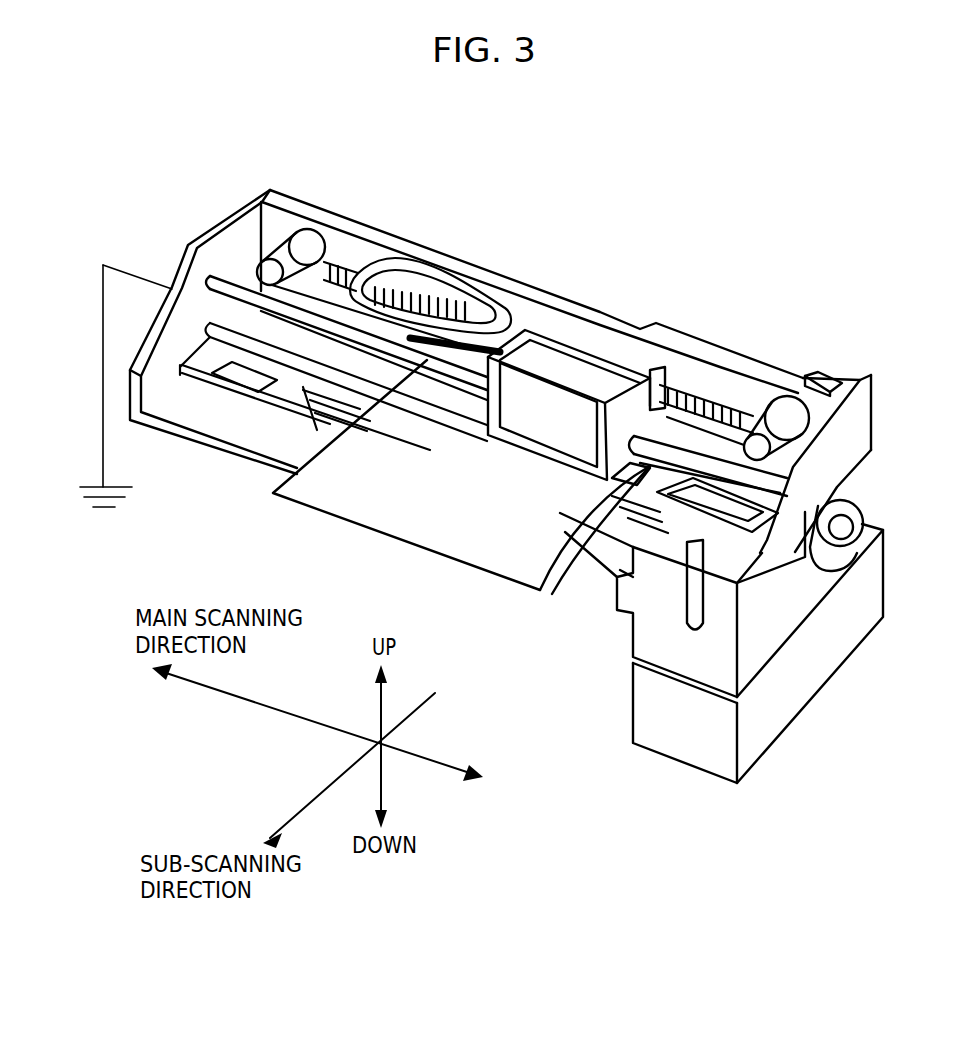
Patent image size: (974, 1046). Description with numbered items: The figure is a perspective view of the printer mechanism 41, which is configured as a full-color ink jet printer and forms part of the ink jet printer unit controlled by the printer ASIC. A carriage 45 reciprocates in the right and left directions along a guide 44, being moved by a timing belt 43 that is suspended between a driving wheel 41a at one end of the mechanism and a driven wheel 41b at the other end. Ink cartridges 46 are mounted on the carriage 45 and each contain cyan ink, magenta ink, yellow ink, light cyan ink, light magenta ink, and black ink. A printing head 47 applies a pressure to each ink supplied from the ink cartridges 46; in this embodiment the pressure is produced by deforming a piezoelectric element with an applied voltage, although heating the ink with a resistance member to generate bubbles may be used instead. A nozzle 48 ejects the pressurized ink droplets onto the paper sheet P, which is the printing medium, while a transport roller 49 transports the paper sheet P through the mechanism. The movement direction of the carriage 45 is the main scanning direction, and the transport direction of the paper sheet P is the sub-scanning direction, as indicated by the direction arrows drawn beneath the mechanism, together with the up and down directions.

The printer mechanism 41 is at (589, 214).
The driving wheel 41a is at (785, 403).
The driven wheel 41b is at (307, 242).
The timing belt 43 is at (720, 418).
The guide 44 is at (217, 278).
The carriage 45 is at (507, 442).
The ink cartridges 46 is at (560, 430).
The printing head 47 is at (627, 475).
The nozzle 48 is at (647, 473).
The transport roller 49 is at (348, 385).
The paper sheet P is at (327, 520).